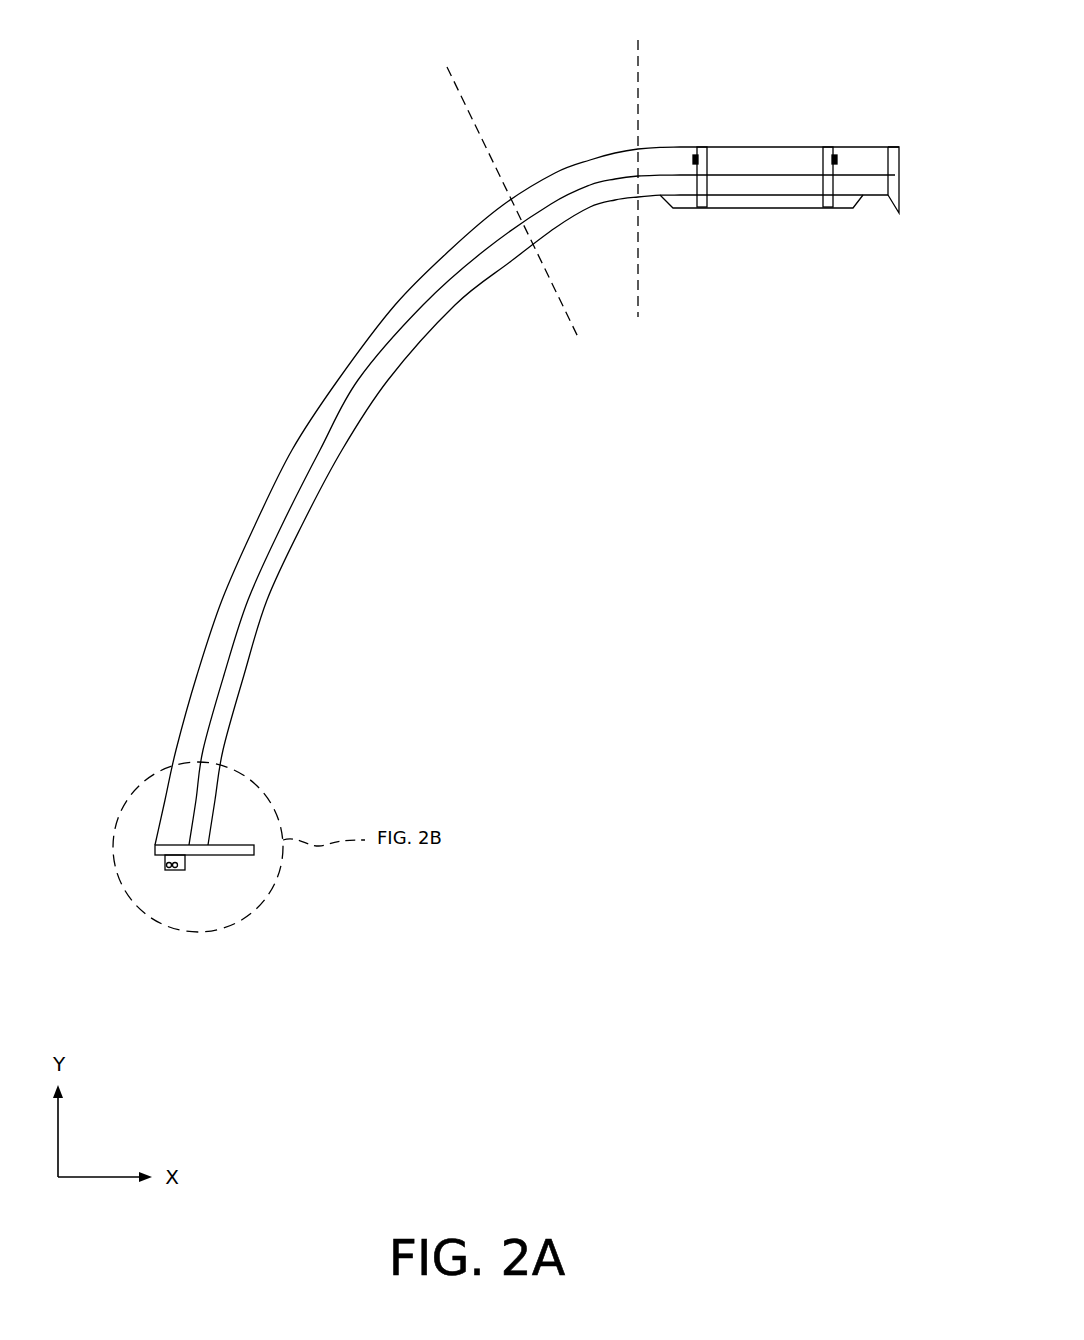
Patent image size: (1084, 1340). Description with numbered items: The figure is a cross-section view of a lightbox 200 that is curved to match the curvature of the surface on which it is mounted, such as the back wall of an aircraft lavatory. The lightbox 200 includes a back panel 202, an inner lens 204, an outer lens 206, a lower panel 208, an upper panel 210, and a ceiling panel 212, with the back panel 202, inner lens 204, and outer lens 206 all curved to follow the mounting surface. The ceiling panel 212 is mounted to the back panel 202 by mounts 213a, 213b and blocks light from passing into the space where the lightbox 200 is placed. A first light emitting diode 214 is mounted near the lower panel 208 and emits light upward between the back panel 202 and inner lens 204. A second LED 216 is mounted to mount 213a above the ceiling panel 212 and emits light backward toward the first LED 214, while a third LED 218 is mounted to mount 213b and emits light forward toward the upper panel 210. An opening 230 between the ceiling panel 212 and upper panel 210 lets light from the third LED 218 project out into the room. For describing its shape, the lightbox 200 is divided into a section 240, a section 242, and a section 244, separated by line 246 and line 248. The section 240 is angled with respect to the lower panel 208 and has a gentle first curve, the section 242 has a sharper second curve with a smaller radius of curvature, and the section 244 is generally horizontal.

The lightbox 200 is at (150, 160).
The back panel 202 is at (290, 442).
The inner lens 204 is at (346, 387).
The outer lens 206 is at (384, 375).
The lower panel 208 is at (155, 848).
The upper panel 210 is at (895, 147).
The ceiling panel 212 is at (755, 208).
The mount 213a is at (708, 150).
The mount 213b is at (828, 150).
The first light emitting diode 214 is at (175, 870).
The second LED 216 is at (696, 158).
The third LED 218 is at (836, 157).
The opening 230 is at (878, 205).
The section 240 is at (327, 200).
The section 242 is at (532, 87).
The section 244 is at (762, 27).
The line 246 is at (419, 59).
The line 248 is at (619, 34).